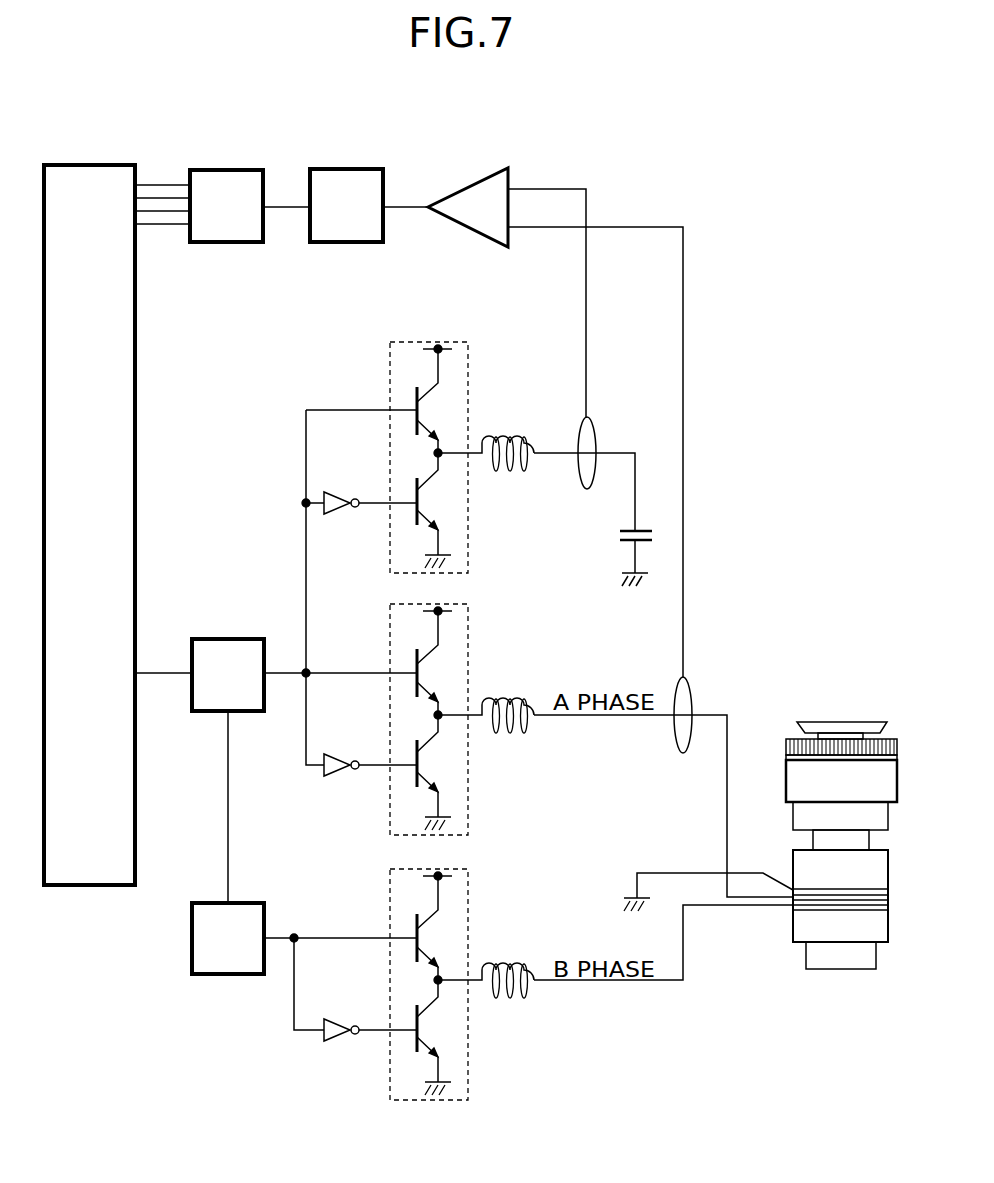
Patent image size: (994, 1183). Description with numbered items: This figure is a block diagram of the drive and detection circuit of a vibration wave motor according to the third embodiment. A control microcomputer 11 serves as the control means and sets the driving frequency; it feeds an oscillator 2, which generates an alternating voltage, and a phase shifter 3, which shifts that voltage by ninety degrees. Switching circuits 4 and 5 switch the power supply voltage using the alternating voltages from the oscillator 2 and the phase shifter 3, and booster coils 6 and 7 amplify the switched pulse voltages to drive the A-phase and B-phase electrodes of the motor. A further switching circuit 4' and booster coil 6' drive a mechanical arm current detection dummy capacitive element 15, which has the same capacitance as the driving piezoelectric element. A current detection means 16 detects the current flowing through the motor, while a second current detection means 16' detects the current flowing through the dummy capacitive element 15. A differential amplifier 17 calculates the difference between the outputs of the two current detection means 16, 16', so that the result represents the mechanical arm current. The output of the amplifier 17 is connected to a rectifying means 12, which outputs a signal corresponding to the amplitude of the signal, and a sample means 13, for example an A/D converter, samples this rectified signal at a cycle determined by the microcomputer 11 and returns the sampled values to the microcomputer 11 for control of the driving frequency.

The control microcomputer 11 is at (93, 162).
The sample means 13 is at (228, 167).
The rectifying means 12 is at (345, 167).
The differential amplifier 17 is at (480, 175).
The oscillator 2 is at (225, 637).
The 90° phase shifter 3 is at (228, 902).
The switching circuit 4' is at (414, 441).
The switching circuit 4 is at (389, 707).
The switching circuit 5 is at (468, 893).
The booster coil 6' is at (497, 421).
The booster coil 6 is at (500, 683).
The booster coil 7 is at (517, 962).
The current detection means 16' is at (612, 430).
The current detection means 16 is at (709, 693).
The mechanical arm current detection dummy capacitive element 15 is at (612, 537).